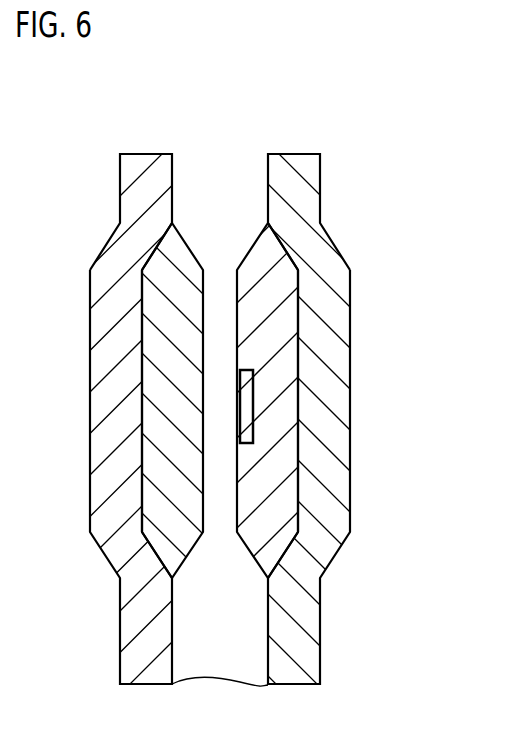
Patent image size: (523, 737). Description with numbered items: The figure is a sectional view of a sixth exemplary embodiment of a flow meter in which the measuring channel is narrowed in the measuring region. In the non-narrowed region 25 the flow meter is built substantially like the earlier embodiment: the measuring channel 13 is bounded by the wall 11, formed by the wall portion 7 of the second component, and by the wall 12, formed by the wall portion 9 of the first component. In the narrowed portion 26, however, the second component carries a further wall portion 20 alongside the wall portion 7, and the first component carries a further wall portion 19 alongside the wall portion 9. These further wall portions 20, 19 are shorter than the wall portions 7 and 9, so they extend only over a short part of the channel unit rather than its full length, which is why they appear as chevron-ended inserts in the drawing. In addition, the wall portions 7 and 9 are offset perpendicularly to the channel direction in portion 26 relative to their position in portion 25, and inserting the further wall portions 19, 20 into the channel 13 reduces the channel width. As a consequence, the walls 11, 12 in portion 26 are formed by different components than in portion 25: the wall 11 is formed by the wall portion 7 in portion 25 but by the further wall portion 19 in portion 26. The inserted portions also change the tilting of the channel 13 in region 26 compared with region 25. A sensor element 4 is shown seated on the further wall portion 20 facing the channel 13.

The wall portion 7 is at (152, 180).
The wall portion 9 is at (305, 188).
The wall 11 is at (168, 643).
The wall 12 is at (275, 625).
The measuring channel 13 is at (225, 358).
The sensor element 4 is at (253, 405).
The further wall portion 19 is at (167, 477).
The further wall portion 20 is at (268, 292).
The non-narrowed region 25 is at (400, 578).
The narrowed region 26 is at (440, 580).